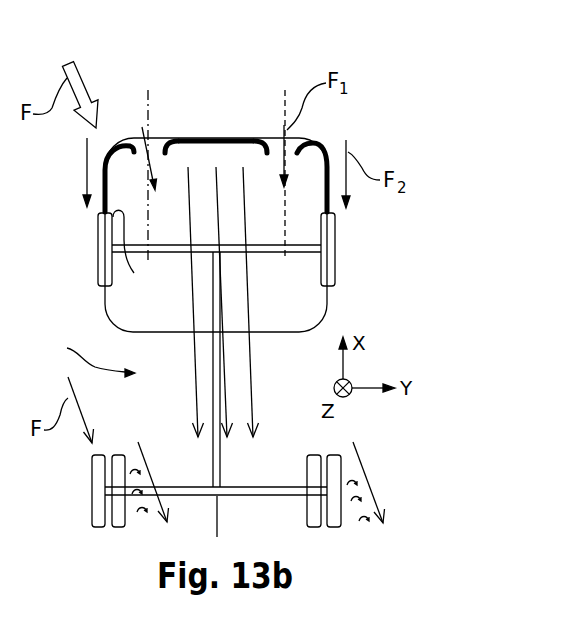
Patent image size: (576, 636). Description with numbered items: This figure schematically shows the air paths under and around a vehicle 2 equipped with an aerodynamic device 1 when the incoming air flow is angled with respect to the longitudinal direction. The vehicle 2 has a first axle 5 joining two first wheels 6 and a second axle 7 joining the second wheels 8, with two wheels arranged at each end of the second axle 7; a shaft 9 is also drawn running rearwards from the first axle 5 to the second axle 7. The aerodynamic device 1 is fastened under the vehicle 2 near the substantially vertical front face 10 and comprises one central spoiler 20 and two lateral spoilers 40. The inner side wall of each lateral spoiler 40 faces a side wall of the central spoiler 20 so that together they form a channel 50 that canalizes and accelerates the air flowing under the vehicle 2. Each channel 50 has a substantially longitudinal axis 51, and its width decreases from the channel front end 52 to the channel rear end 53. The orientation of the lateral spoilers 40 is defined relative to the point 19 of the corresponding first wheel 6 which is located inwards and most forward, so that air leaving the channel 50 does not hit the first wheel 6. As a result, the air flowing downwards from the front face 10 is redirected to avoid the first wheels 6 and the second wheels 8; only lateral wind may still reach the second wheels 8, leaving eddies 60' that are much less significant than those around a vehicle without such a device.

The aerodynamic device 1 is at (101, 165).
The vehicle 2 is at (93, 356).
The first axle 5 is at (265, 252).
The first wheels 6 is at (98, 268).
The second axle 7 is at (253, 487).
The second wheels 8 is at (92, 508).
The drive shaft 9 is at (217, 508).
The front face 10 is at (270, 137).
The point of the first wheel 19 is at (137, 252).
The central spoiler 20 is at (227, 137).
The lateral spoilers 40 is at (328, 150).
The channel 50 is at (163, 126).
The longitudinal axis 51 is at (148, 108).
The channel front end 52 is at (130, 133).
The channel rear end 53 is at (268, 158).
The eddies 60' is at (249, 508).